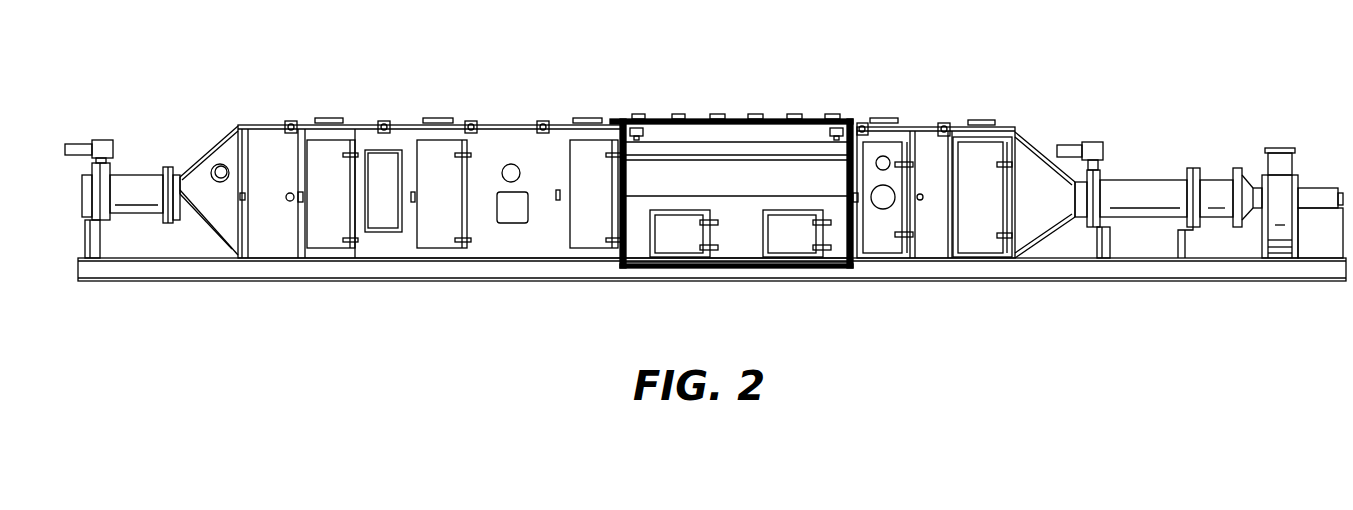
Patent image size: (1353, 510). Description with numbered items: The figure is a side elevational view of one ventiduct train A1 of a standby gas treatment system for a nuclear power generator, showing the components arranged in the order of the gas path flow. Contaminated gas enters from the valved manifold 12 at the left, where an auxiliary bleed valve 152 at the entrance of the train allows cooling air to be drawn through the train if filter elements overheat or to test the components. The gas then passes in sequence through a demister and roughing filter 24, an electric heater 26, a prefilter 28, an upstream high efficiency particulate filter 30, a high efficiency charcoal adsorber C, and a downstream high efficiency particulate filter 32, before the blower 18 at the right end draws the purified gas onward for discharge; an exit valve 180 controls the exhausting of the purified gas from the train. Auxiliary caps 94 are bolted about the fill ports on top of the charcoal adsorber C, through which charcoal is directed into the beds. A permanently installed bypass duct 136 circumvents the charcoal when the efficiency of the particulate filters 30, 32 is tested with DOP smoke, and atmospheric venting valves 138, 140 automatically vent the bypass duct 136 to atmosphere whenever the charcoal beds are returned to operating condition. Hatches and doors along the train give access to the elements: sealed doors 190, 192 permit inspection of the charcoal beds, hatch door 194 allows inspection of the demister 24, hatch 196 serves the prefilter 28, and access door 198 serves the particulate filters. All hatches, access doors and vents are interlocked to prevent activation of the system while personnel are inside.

The valved manifold 12 is at (82, 202).
The auxiliary bleed valve 152 is at (100, 140).
The demister and roughing filter 24 is at (273, 90).
The ventiduct train A1 is at (307, 105).
The electric heater 26 is at (410, 85).
The prefilter 28 is at (503, 92).
The upstream high efficiency particulate filter 30 is at (565, 83).
The atmospheric venting valve 138 is at (633, 128).
The auxiliary cap 94 is at (713, 113).
The high efficiency charcoal adsorber C is at (728, 132).
The atmospheric venting valve 140 is at (838, 132).
The bypass duct 136 is at (767, 148).
The downstream high efficiency particulate filter 32 is at (978, 90).
The exit valve 180 is at (1092, 142).
The blower 18 is at (1287, 148).
The hatch door 194 is at (325, 232).
The hatch 196 is at (442, 233).
The sealed door 190 is at (593, 238).
The sealed door 192 is at (888, 240).
The access door 198 is at (982, 242).